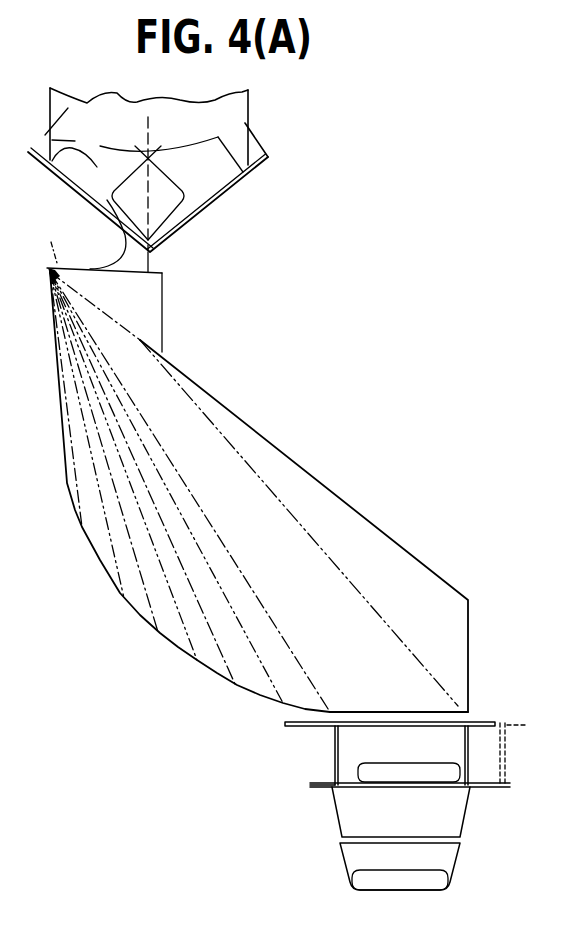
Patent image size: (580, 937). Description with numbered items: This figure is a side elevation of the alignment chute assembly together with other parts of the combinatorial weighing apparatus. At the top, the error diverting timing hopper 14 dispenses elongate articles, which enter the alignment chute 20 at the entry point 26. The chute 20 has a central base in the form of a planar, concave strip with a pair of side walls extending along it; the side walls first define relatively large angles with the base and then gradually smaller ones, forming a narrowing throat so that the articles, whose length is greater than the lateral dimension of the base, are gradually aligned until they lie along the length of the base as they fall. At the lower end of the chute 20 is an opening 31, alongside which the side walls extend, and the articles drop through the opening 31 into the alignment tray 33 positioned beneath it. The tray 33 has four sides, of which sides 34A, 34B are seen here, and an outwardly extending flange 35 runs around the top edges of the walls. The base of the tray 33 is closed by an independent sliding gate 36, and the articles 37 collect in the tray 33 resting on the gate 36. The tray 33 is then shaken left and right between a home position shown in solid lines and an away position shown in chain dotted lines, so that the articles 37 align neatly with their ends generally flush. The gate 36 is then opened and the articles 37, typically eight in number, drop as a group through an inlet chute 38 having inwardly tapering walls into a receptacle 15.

The error diverting timing hopper 14 is at (232, 121).
The alignment chute 20 is at (232, 404).
The chute entry point 26 is at (83, 215).
The opening 31 is at (425, 712).
The alignment tray 33 is at (325, 758).
The tray side 34A is at (326, 735).
The tray side 34B is at (478, 748).
The outwardly extending flange 35 is at (278, 721).
The sliding gate 36 is at (311, 795).
The articles 37 is at (382, 768).
The inlet chute 38 is at (471, 822).
The receptacle 15 is at (337, 863).